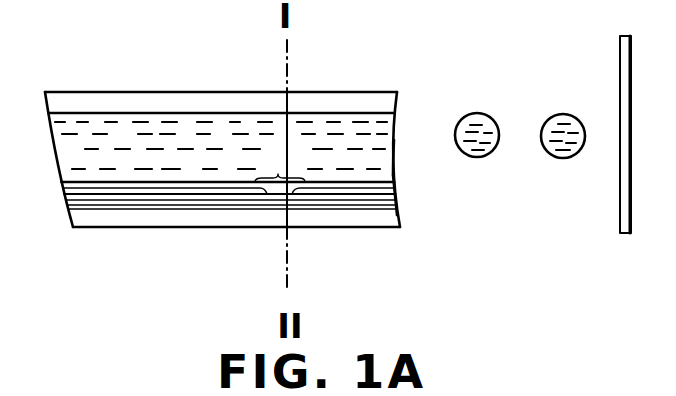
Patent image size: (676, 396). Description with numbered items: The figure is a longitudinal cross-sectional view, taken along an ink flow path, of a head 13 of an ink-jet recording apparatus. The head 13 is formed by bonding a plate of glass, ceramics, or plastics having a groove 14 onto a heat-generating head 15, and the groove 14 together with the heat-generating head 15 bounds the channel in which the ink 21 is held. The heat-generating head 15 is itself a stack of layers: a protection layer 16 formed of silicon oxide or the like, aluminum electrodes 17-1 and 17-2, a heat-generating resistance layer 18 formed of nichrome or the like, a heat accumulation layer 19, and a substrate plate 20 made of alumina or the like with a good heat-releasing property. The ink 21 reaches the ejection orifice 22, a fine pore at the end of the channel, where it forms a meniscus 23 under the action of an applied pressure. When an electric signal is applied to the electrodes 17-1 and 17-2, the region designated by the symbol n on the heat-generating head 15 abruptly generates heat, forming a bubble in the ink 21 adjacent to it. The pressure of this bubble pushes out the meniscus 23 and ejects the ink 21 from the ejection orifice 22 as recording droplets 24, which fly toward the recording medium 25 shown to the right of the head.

The head 13 is at (155, 92).
The groove 14 is at (218, 113).
The ink 21 is at (73, 118).
The heat-generating region n is at (280, 165).
The heat-generating head 15 is at (50, 180).
The protection layer 16 is at (100, 188).
The aluminum electrode 17-1 is at (148, 194).
The aluminum electrode 17-2 is at (373, 194).
The heat-generating resistance layer 18 is at (212, 200).
The heat accumulation layer 19 is at (252, 207).
The substrate plate 20 is at (322, 228).
The ejection orifice 22 is at (402, 176).
The meniscus 23 is at (395, 153).
The recording droplets 24 is at (448, 110).
The recording medium 25 is at (620, 90).